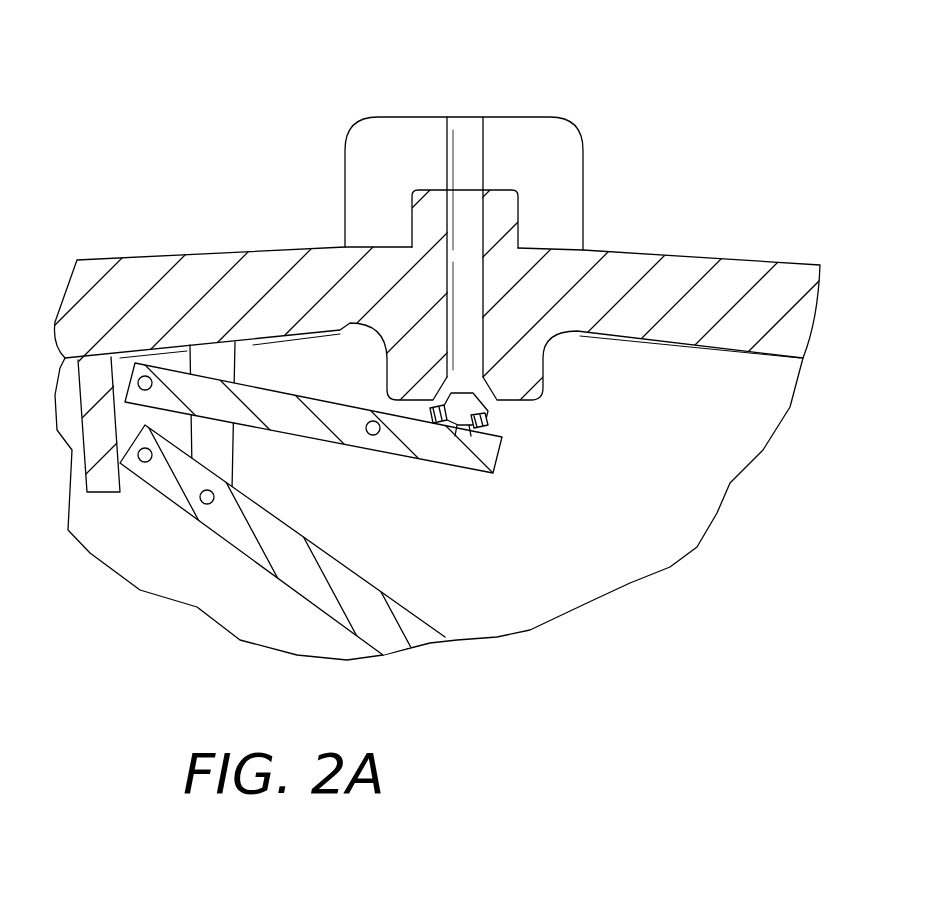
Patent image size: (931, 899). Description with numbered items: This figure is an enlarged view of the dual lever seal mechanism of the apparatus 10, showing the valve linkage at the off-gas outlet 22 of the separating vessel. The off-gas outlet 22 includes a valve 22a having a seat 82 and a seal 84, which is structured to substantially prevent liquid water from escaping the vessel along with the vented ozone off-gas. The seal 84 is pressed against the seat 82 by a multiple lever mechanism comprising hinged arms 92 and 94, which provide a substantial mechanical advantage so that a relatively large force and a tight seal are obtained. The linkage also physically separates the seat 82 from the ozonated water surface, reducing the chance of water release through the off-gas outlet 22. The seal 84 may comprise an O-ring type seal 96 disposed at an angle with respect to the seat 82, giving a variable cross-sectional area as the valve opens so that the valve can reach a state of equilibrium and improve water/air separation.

The apparatus 10 is at (170, 203).
The off-gas outlet 22 is at (553, 205).
The valve 22a is at (582, 360).
The seat 82 is at (515, 399).
The seal 84 is at (458, 422).
The hinged arm 92 is at (320, 568).
The hinged arm 94 is at (290, 407).
The O-ring type seal 96 is at (483, 420).